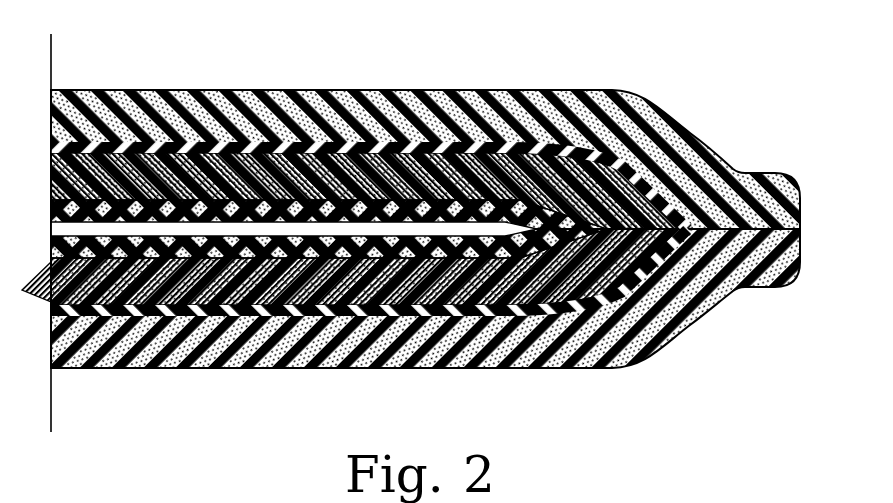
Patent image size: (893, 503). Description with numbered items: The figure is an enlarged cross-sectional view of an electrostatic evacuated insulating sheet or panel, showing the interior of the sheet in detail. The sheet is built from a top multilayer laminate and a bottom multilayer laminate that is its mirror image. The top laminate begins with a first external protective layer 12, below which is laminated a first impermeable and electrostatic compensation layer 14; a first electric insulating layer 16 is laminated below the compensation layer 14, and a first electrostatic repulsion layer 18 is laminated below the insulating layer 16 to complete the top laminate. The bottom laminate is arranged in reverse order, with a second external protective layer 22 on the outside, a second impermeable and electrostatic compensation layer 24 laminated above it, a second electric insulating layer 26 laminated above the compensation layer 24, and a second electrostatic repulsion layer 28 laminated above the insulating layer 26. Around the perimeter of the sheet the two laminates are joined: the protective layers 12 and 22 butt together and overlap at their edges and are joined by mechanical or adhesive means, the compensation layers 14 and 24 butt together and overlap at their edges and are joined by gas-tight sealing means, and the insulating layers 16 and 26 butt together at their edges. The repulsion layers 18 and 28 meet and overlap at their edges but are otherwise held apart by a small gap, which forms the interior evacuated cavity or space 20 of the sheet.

The first external protective layer 12 is at (190, 90).
The first impermeable and electrostatic compensation layer 14 is at (257, 147).
The first electric insulating layer 16 is at (330, 170).
The first electrostatic repulsion layer 18 is at (407, 213).
The interior evacuated cavity 20 is at (467, 232).
The second external protective layer 22 is at (215, 368).
The second impermeable and electrostatic compensation layer 24 is at (282, 312).
The second electric insulating layer 26 is at (353, 293).
The second electrostatic repulsion layer 28 is at (445, 250).